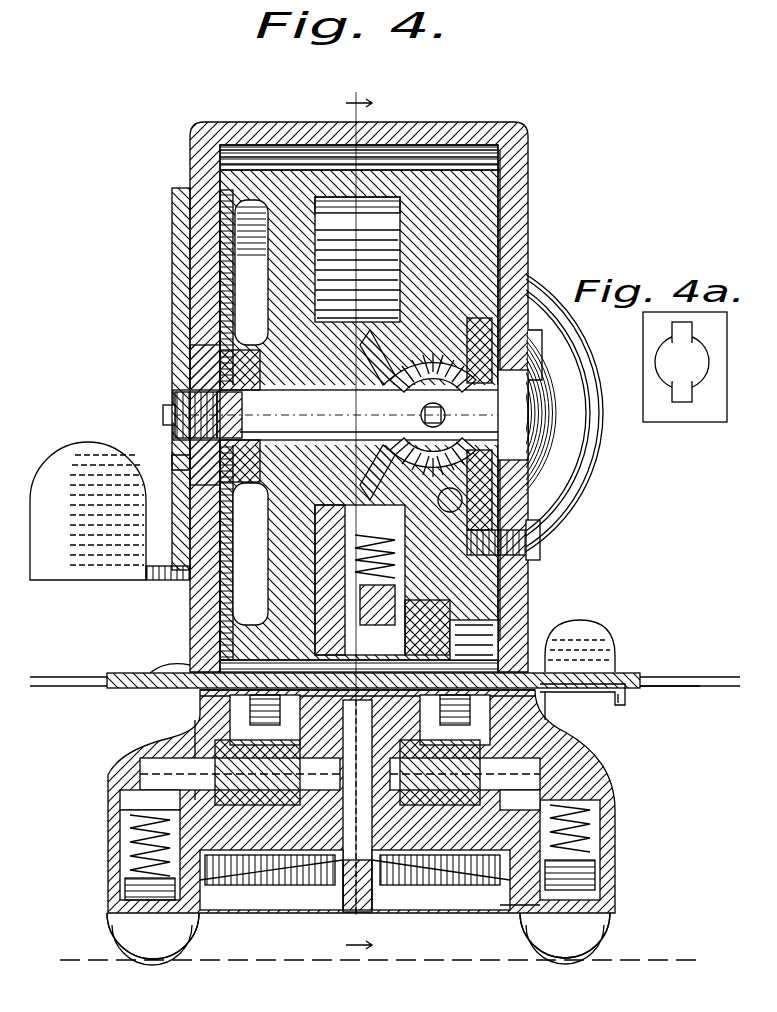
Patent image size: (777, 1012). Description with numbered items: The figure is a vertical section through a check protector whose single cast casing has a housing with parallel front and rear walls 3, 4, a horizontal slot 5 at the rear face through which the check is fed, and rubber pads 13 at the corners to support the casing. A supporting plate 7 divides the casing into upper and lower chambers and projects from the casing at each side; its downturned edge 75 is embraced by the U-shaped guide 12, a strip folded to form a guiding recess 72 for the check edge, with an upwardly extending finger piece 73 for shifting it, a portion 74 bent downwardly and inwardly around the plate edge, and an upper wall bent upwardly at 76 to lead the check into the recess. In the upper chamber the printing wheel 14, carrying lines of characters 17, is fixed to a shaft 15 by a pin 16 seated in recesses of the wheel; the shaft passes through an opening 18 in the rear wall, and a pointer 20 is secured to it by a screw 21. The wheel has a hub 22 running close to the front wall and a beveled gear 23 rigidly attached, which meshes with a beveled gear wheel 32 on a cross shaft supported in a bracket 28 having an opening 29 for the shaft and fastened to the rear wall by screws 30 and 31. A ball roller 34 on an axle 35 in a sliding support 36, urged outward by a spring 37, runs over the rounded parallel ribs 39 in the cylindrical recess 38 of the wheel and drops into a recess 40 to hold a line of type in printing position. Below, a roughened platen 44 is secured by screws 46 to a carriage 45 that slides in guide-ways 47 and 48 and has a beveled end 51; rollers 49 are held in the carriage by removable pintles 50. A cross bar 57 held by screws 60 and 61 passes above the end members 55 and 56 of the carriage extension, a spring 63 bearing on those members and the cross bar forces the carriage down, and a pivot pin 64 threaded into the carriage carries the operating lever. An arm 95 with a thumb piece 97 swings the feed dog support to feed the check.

In FIG. 4, the front wall 3 is at (190, 162).
In FIG. 4, the rear wall 4 is at (515, 235).
In FIG. 4, the horizontal slot 5 is at (448, 525).
In FIG. 4, the supporting plate 7 is at (563, 703).
In FIG. 4, the U-shaped guide 12 is at (108, 680).
In FIG. 4, the rubber pads 13 is at (125, 936).
In FIG. 4, the printing wheel 14 is at (290, 247).
In FIG. 4A, the printing wheel 14 is at (705, 395).
In FIG. 4, the shaft 15 is at (215, 398).
In FIG. 4, the pin 16 is at (375, 395).
In FIG. 4, the lines of characters 17 is at (275, 150).
In FIG. 4, the opening 18 is at (512, 410).
In FIG. 4A, the opening 18 is at (688, 378).
In FIG. 4, the pointer 20 is at (175, 245).
In FIG. 4, the screw 21 is at (165, 412).
In FIG. 4, the hub 22 is at (240, 360).
In FIG. 4, the beveled gear 23 is at (380, 345).
In FIG. 4, the bracket 28 is at (540, 555).
In FIG. 4, the opening 29 is at (530, 485).
In FIG. 4, the screw 30 is at (538, 350).
In FIG. 4, the screw 31 is at (540, 563).
In FIG. 4, the beveled gear wheel 32 is at (440, 360).
In FIG. 4, the ball roller 34 is at (455, 615).
In FIG. 4, the axle 35 is at (530, 622).
In FIG. 4, the support 36 is at (385, 603).
In FIG. 4, the spring 37 is at (385, 570).
In FIG. 4, the cylindrical recess 38 is at (410, 160).
In FIG. 4, the rounded parallel ribs 39 is at (400, 295).
In FIG. 4, the recess 40 is at (390, 265).
In FIG. 4, the platen 44 is at (560, 745).
In FIG. 4, the carriage 45 is at (520, 790).
In FIG. 4, the screws 46 is at (190, 720).
In FIG. 4, the guide-way 47 is at (140, 795).
In FIG. 4, the guide-way 48 is at (620, 820).
In FIG. 4, the rollers 49 is at (200, 760).
In FIG. 4, the removable pintles 50 is at (195, 775).
In FIG. 4, the beveled end 51 is at (535, 730).
In FIG. 4, the end member 55 is at (212, 915).
In FIG. 4, the end member 56 is at (505, 910).
In FIG. 4, the cross bar 57 is at (130, 825).
In FIG. 4, the screw 60 is at (140, 870).
In FIG. 4, the screw 61 is at (600, 855).
In FIG. 4, the spring 63 is at (470, 885).
In FIG. 4, the pivot pin 64 is at (340, 915).
In FIG. 4, the guiding recess 72 is at (165, 685).
In FIG. 4, the finger piece 73 is at (580, 646).
In FIG. 4, the bent portion 74 is at (622, 705).
In FIG. 4, the downturned edge 75 is at (680, 686).
In FIG. 4, the upwardly bent wall 76 is at (590, 668).
In FIG. 4, the arm 95 is at (165, 572).
In FIG. 4, the thumb piece 97 is at (88, 511).